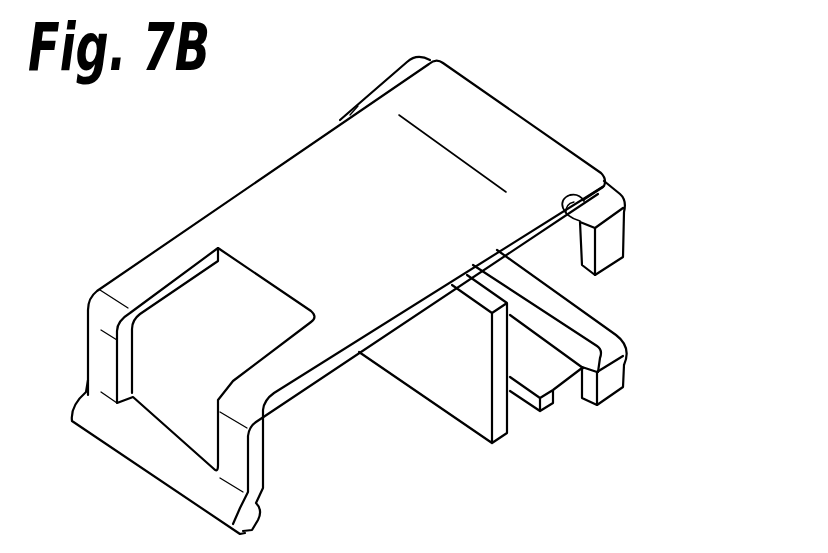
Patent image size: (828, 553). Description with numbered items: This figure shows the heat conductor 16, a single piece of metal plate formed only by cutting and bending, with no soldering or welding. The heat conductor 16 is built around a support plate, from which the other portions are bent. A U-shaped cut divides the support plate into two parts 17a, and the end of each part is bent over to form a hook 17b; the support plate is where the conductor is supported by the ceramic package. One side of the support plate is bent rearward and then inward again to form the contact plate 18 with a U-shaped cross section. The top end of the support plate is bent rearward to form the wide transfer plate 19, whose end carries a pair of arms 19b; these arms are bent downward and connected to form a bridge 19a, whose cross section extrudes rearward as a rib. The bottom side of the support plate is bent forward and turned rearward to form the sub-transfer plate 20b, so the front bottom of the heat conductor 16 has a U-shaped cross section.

The heat conductor 16 is at (196, 192).
The transfer plate 19 is at (348, 195).
The bridge 19a is at (153, 465).
The arms 19b is at (167, 298).
The parts of the support plate 17a is at (560, 307).
The hook 17b is at (612, 240).
The contact plate 18 is at (448, 375).
The sub-transfer plate 20b is at (542, 372).